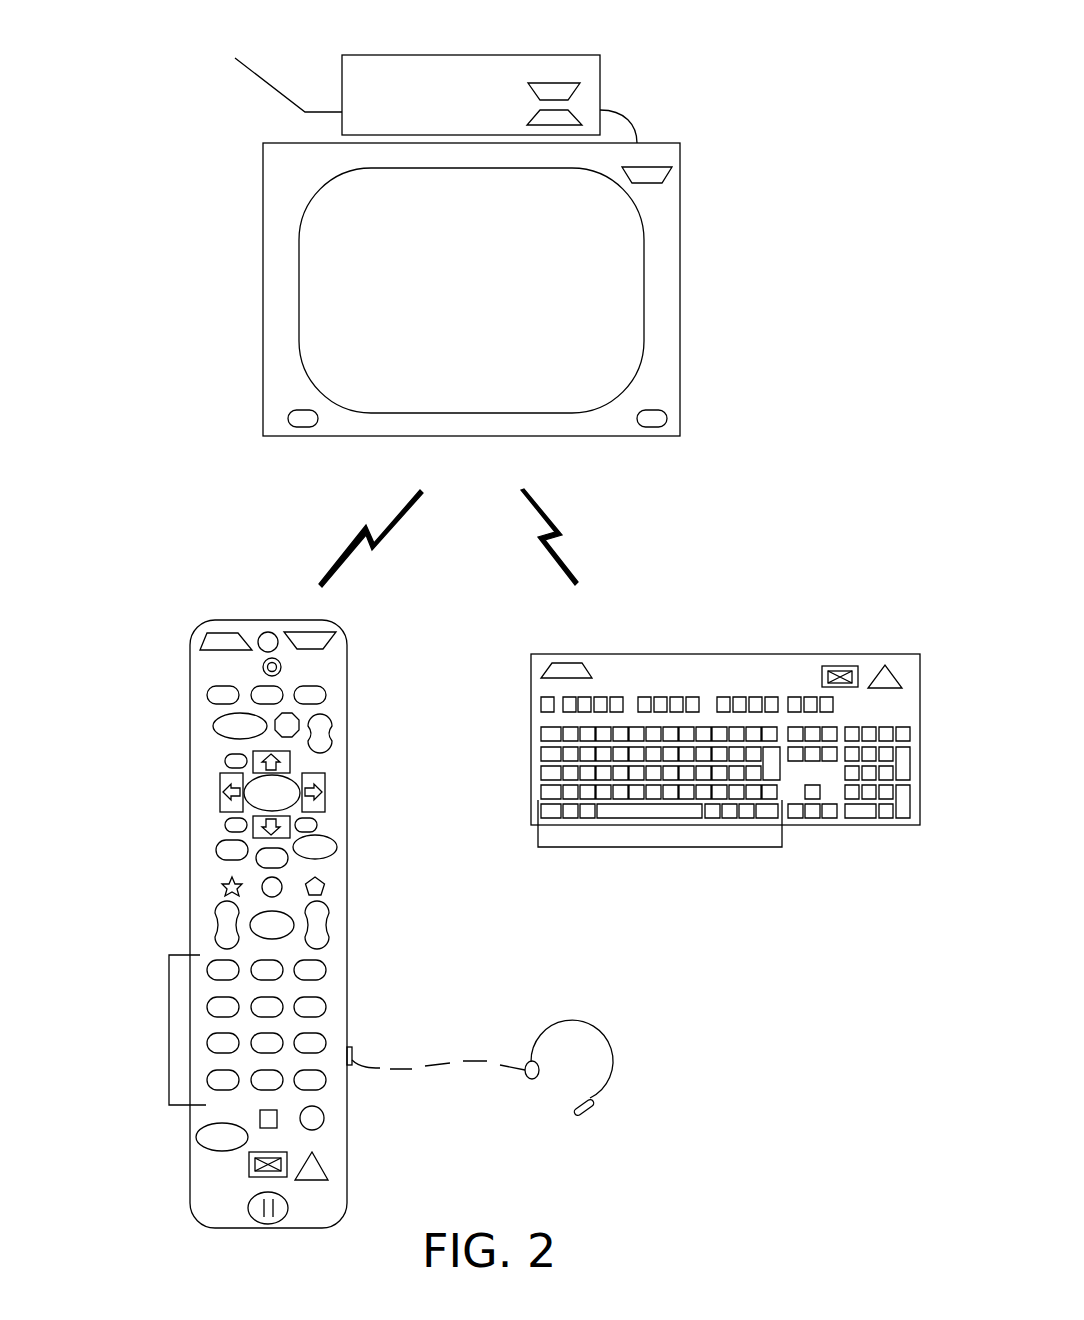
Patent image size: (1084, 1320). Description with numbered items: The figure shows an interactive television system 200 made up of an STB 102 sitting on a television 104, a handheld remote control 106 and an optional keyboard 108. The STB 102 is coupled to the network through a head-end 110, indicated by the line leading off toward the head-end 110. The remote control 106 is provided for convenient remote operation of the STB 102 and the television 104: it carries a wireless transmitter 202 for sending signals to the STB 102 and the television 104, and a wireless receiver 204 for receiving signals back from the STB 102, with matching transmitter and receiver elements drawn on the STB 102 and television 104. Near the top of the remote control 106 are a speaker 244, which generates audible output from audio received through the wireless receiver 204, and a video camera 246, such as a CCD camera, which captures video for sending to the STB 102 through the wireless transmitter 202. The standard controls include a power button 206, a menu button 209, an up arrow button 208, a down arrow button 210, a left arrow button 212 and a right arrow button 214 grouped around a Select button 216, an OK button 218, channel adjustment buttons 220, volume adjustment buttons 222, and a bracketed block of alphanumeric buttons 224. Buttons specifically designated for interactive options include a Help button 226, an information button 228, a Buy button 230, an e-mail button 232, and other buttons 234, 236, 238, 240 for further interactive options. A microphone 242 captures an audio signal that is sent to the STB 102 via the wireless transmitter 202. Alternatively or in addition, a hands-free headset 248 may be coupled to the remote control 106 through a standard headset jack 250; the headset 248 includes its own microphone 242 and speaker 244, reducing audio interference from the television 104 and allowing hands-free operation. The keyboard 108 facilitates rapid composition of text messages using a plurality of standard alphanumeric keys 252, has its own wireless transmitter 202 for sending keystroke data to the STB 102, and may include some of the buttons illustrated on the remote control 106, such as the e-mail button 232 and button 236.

The interactive television system 200 is at (842, 67).
The head-end 110 is at (259, 71).
The STB 102 is at (489, 99).
The television 104 is at (471, 289).
The remote control 106 is at (347, 884).
The keyboard 108 is at (725, 680).
The wireless transmitter 202 is at (575, 118).
The wireless receiver 204 is at (555, 82).
The power button 206 is at (207, 697).
The up arrow button 208 is at (333, 750).
The menu button 209 is at (213, 728).
The down arrow button 210 is at (253, 830).
The left arrow button 212 is at (220, 793).
The right arrow button 214 is at (325, 790).
The Select button 216 is at (290, 771).
The OK button 218 is at (257, 920).
The channel adjustment buttons 220 is at (215, 937).
The volume adjustment buttons 222 is at (329, 937).
The alphanumeric buttons 224 is at (169, 1040).
The Help button 226 is at (196, 1137).
The information button 228 is at (297, 718).
The Buy button 230 is at (337, 847).
The e-mail button 232 is at (249, 1165).
The button 234 is at (323, 893).
The button 236 is at (316, 1170).
The button 238 is at (224, 884).
The button 240 is at (278, 1112).
The microphone 242 is at (288, 1208).
The speaker 244 is at (265, 640).
The video camera 246 is at (282, 665).
The hands-free headset 248 is at (619, 1060).
The headset jack 250 is at (350, 1043).
The alphanumeric keys 252 is at (660, 848).